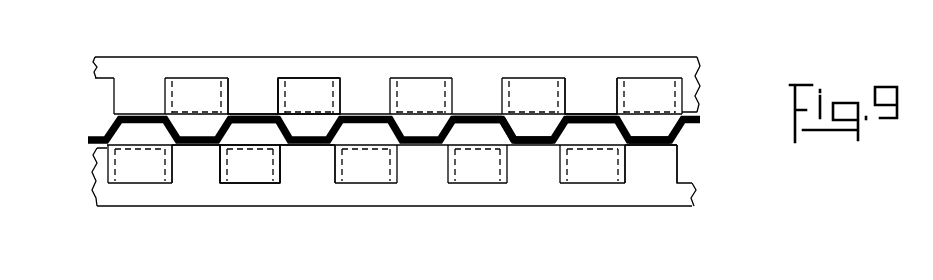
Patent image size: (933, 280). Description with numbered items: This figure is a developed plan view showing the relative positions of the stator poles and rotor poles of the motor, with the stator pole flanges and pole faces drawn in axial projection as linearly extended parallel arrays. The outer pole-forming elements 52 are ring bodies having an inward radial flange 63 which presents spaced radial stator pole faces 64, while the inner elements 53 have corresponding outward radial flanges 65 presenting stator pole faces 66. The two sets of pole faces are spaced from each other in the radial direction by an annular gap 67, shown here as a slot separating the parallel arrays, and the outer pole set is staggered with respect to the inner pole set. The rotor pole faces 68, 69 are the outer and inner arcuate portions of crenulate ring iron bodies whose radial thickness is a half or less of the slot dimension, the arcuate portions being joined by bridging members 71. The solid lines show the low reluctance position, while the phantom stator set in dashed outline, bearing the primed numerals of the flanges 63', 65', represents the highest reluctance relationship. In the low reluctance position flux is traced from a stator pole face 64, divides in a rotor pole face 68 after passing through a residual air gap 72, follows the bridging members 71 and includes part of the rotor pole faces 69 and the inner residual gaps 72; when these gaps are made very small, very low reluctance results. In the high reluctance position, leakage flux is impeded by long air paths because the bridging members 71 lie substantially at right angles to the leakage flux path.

The outer pole-forming elements 52 is at (210, 57).
The inner pole-forming elements 53 is at (420, 196).
The inward radial flange 63 is at (259, 67).
The phantom inward radial flange 63' is at (327, 67).
The stator pole faces 64 is at (262, 124).
The outward radial flanges 65 is at (315, 191).
The phantom outward radial flange 65' is at (252, 191).
The stator pole faces 66 is at (205, 147).
The annular gap 67 is at (421, 122).
The rotor pole faces 68 is at (593, 112).
The rotor pole faces 69 is at (655, 148).
The bridging members 71 is at (513, 133).
The residual air gap 72 is at (476, 116).